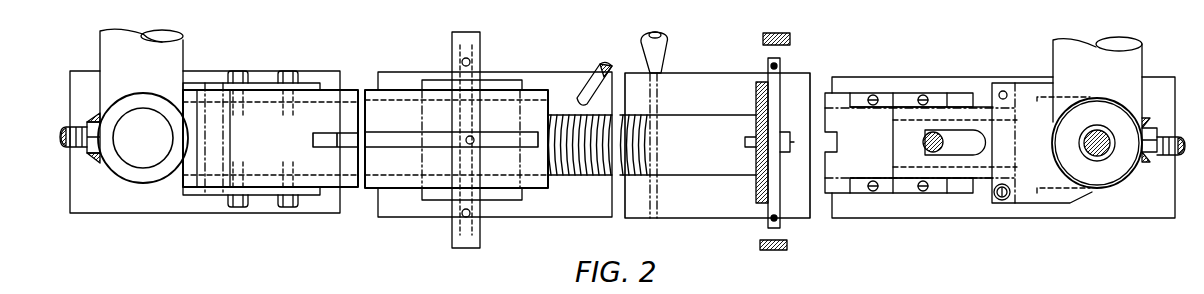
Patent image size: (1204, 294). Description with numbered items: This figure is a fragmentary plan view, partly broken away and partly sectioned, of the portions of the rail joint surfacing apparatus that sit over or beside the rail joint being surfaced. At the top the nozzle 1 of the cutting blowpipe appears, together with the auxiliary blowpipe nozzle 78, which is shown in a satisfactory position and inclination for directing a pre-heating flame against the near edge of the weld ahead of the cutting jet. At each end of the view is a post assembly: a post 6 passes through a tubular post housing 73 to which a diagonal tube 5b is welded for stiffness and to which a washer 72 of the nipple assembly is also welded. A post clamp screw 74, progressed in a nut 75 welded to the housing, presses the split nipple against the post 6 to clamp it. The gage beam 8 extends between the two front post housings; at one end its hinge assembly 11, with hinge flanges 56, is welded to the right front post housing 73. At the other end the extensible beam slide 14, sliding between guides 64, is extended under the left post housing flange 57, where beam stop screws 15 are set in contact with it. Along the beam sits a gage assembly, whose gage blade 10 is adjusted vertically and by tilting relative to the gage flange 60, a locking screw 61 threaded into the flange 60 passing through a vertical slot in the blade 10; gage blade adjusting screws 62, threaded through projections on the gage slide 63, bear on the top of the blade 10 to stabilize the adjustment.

The nozzle 1 is at (672, 56).
The diagonal tube 5b is at (621, 77).
The post 6 is at (1100, 158).
The gage beam 8 is at (364, 89).
The gage blade 10 is at (782, 67).
The hinge assembly 11 is at (268, 200).
The beam slide 14 is at (955, 142).
The beam stop screw 15 is at (1001, 201).
The hinge flange 56 is at (193, 90).
The left post housing flange 57 is at (1042, 143).
The gage flange 60 is at (755, 190).
The locking screw 61 is at (745, 142).
The gage blade adjusting screw 62 is at (769, 65).
The gage slide 63 is at (435, 198).
The guide 64 is at (866, 97).
The washer 72 is at (1113, 175).
The post housing 73 is at (122, 182).
The post clamp screw 74 is at (86, 152).
The nut 75 is at (89, 120).
The auxiliary blowpipe nozzle 78 is at (578, 65).